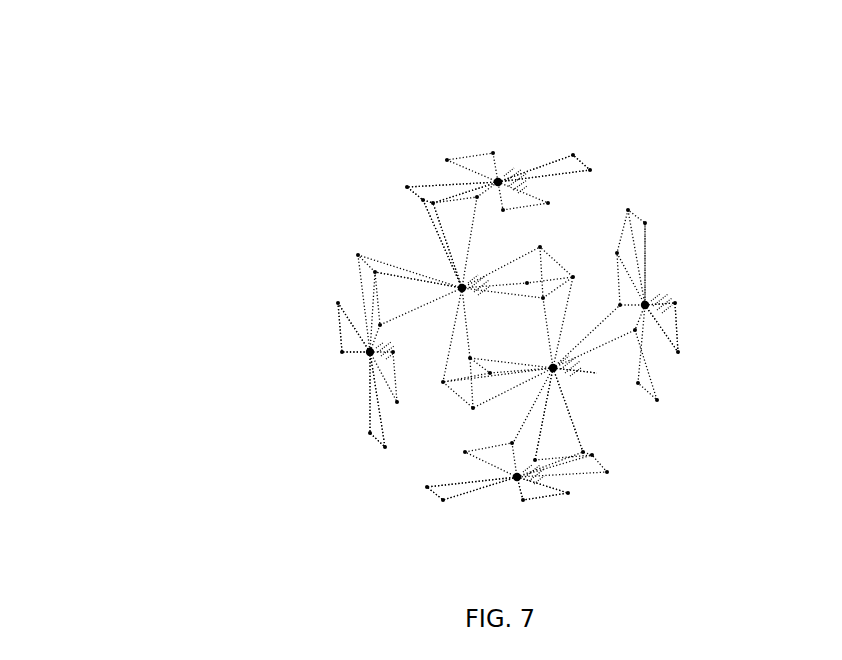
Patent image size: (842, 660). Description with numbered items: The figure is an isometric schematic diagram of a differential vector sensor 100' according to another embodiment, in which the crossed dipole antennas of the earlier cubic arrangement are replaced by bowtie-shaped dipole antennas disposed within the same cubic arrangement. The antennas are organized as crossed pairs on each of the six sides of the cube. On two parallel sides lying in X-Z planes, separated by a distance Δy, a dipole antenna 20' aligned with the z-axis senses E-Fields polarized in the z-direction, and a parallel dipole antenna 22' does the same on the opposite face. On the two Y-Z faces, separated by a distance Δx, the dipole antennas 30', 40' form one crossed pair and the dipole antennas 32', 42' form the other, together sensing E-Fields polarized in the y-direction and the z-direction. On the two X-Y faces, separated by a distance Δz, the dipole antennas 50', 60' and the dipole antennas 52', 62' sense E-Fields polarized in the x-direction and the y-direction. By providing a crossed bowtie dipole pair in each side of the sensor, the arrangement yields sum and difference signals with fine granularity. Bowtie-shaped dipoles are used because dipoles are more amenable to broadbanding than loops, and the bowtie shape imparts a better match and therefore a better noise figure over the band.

The differential vector sensor 100' is at (378, 273).
The dipole antenna 20' is at (295, 322).
The dipole antenna 22' is at (712, 327).
The dipole antenna 30' is at (510, 426).
The dipole antenna 32' is at (525, 249).
The dipole antenna 40' is at (610, 429).
The dipole antenna 42' is at (403, 220).
The dipole antenna 50' is at (544, 110).
The dipole antenna 52' is at (528, 517).
The dipole antenna 60' is at (452, 138).
The dipole antenna 62' is at (444, 508).